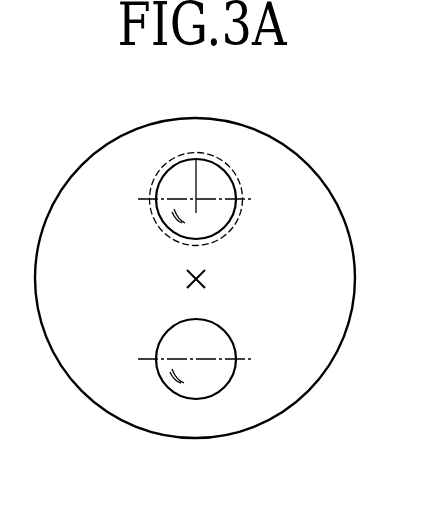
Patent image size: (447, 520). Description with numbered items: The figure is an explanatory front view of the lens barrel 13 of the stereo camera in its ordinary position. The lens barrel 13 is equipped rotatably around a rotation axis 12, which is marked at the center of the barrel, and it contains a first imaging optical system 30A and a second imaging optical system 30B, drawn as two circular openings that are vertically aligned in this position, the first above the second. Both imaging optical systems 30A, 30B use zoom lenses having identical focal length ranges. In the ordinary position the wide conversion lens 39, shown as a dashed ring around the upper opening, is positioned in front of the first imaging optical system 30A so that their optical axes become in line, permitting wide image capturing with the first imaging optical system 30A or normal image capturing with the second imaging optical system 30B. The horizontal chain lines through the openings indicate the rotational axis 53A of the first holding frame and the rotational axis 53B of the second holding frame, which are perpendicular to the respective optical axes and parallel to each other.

The lens barrel 13 is at (292, 145).
The first imaging optical system 30A is at (235, 185).
The second imaging optical system 30B is at (232, 378).
The wide conversion lens 39 is at (165, 159).
The rotational axis 53A is at (147, 200).
The rotational axis 53B is at (147, 360).
The rotation axis 12 is at (208, 280).